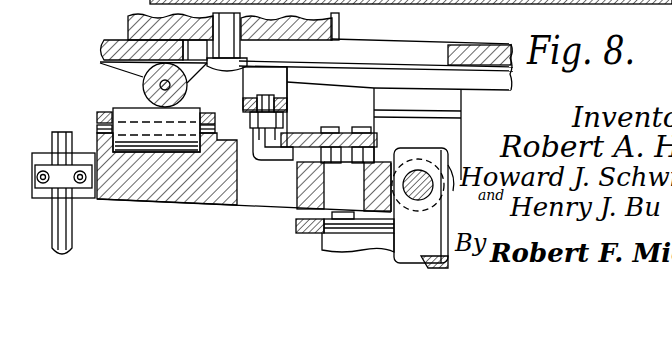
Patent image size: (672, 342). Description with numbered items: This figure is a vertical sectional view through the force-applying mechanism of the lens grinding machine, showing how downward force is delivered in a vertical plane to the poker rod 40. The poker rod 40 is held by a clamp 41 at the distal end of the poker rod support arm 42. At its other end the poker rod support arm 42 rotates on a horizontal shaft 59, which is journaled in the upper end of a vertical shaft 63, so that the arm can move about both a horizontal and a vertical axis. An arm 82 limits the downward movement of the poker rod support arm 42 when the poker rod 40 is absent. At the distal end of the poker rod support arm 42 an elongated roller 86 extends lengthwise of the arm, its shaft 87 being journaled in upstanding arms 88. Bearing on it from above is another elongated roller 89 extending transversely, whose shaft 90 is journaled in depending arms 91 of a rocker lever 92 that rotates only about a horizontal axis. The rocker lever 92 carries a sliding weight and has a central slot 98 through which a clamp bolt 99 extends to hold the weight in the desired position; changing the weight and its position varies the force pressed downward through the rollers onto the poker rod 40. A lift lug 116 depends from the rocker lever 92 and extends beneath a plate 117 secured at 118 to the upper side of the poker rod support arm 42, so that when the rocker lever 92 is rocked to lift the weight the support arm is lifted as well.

The poker rod 40 is at (58, 132).
The clamp 41 is at (73, 170).
The poker rod support arm 42 is at (188, 191).
The horizontal shaft 59 is at (426, 188).
The vertical shaft 63 is at (407, 248).
The arm 82 is at (304, 233).
The elongated roller 86 is at (125, 110).
The shaft 87 is at (251, 128).
The upstanding arms 88 is at (107, 110).
The elongated roller 89 is at (188, 97).
The shaft 90 is at (146, 88).
The depending arms 91 is at (133, 67).
The rocker lever 92 is at (420, 47).
The slot 98 is at (357, 50).
The clamp bolt 99 is at (244, 15).
The lift lug 116 is at (264, 153).
The plate 117 is at (302, 133).
The securing point 118 is at (363, 127).